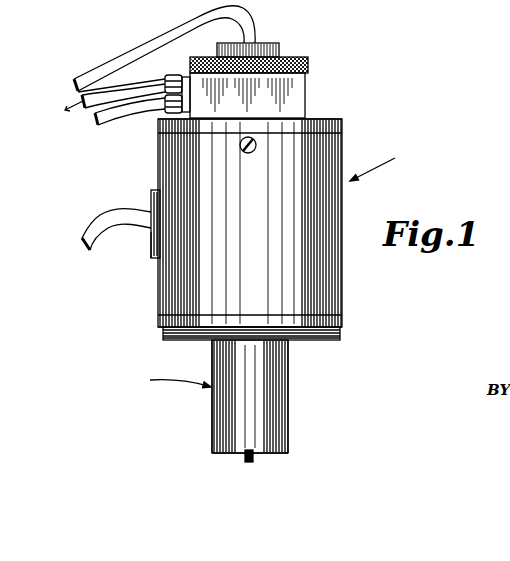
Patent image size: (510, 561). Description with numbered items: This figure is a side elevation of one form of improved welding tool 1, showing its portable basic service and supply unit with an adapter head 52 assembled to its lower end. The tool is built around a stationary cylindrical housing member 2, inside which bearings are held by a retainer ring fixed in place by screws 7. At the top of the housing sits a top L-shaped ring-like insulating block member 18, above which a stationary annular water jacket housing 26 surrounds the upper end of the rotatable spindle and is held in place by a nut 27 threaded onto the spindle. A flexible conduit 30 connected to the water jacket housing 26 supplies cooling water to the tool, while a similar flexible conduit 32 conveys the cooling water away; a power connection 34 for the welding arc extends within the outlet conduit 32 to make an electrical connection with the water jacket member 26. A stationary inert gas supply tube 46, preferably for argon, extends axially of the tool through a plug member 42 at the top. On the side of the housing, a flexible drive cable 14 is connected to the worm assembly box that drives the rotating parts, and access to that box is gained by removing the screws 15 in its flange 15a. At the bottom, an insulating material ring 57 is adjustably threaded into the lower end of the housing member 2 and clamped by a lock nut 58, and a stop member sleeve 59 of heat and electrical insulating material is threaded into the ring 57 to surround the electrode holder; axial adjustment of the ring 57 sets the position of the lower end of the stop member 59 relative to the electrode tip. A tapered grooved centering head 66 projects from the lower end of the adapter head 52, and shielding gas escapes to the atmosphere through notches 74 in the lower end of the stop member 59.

The welding tool 1 is at (377, 162).
The housing member 2 is at (330, 218).
The screws 7 is at (254, 152).
The flexible drive cable 14 is at (96, 236).
The screws 15 is at (152, 195).
The flange 15a is at (152, 241).
The insulating block member 18 is at (342, 127).
The water jacket housing 26 is at (296, 101).
The nut 27 is at (308, 63).
The flexible conduit 30 is at (118, 114).
The flexible conduit 32 is at (120, 88).
The power connection 34 is at (62, 106).
The plug member 42 is at (280, 51).
The inert gas supply tube 46 is at (174, 37).
The adapter head 52 is at (209, 396).
The insulating material ring 57 is at (335, 341).
The lock nut 58 is at (342, 326).
The stop member sleeve 59 is at (286, 405).
The centering head 66 is at (255, 456).
The notches 74 is at (245, 451).